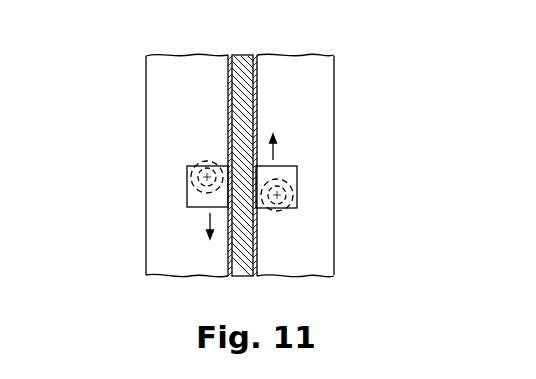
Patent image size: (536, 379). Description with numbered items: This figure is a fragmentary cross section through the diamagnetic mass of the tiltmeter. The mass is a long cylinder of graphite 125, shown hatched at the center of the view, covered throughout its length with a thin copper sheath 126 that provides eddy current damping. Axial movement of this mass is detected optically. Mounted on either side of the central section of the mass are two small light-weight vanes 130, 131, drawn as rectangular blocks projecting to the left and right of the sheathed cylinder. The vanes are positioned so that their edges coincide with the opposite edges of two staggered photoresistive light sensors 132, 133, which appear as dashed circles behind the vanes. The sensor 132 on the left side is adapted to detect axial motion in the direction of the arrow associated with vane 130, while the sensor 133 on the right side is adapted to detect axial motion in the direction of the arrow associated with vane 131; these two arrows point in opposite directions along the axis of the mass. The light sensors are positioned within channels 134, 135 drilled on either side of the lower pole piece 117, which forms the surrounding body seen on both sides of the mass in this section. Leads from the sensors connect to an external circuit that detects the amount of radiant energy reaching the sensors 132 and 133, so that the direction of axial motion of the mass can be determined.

The lower pole piece 117 is at (318, 257).
The graphite cylinder 125 is at (246, 137).
The copper sheath 126 is at (257, 103).
The vane 130 is at (188, 190).
The vane 131 is at (296, 193).
The photoresistive light sensor 132 is at (205, 183).
The photoresistive light sensor 133 is at (283, 192).
The channel 134 is at (200, 163).
The channel 135 is at (285, 208).